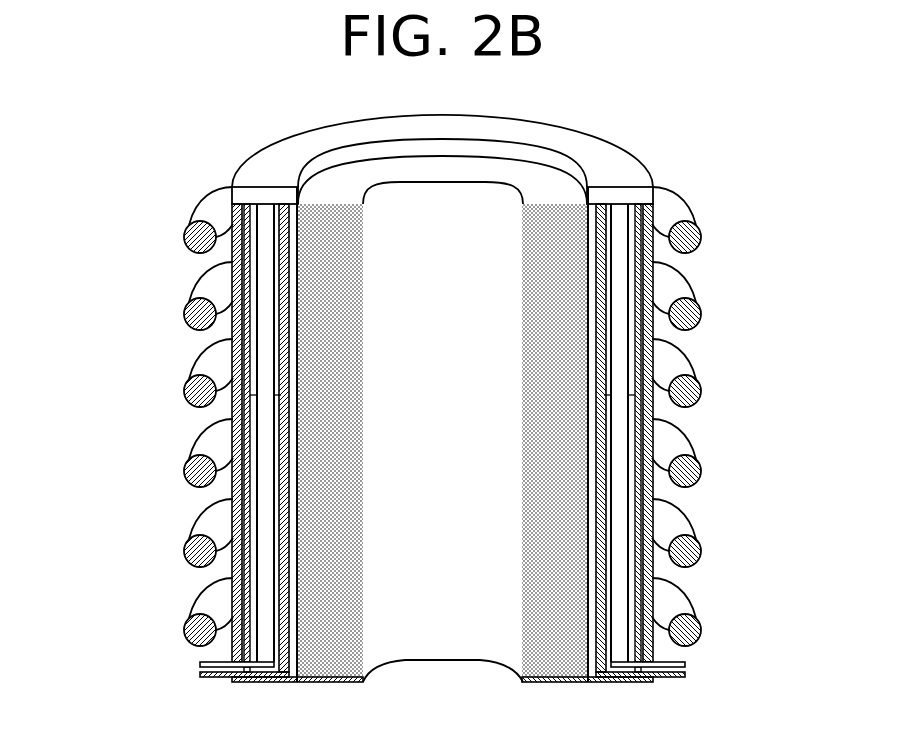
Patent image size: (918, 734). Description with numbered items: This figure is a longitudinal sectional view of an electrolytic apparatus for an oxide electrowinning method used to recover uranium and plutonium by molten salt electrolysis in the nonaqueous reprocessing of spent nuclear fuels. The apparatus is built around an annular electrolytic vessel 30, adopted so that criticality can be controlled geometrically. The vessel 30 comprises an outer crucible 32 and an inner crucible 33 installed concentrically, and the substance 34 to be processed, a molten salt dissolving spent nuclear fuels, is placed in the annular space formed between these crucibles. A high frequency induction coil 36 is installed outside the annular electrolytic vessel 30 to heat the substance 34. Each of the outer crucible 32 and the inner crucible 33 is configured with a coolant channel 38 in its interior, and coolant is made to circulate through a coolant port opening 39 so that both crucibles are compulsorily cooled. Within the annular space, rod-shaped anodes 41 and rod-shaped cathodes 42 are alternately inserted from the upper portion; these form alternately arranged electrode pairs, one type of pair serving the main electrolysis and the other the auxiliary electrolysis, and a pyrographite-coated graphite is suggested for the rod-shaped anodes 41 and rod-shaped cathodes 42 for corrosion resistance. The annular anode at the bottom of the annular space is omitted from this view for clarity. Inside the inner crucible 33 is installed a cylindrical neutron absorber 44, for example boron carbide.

The annular electrolytic vessel 30 is at (231, 251).
The outer crucible 32 is at (234, 186).
The inner crucible 33 is at (284, 200).
The substance to be processed 34 is at (253, 440).
The high frequency induction coil 36 is at (186, 391).
The coolant channel 38 is at (283, 523).
The coolant port opening 39 is at (200, 663).
The rod-shaped anode 41 is at (260, 602).
The rod-shaped cathode 42 is at (442, 433).
The cylindrical neutron absorber 44 is at (560, 214).